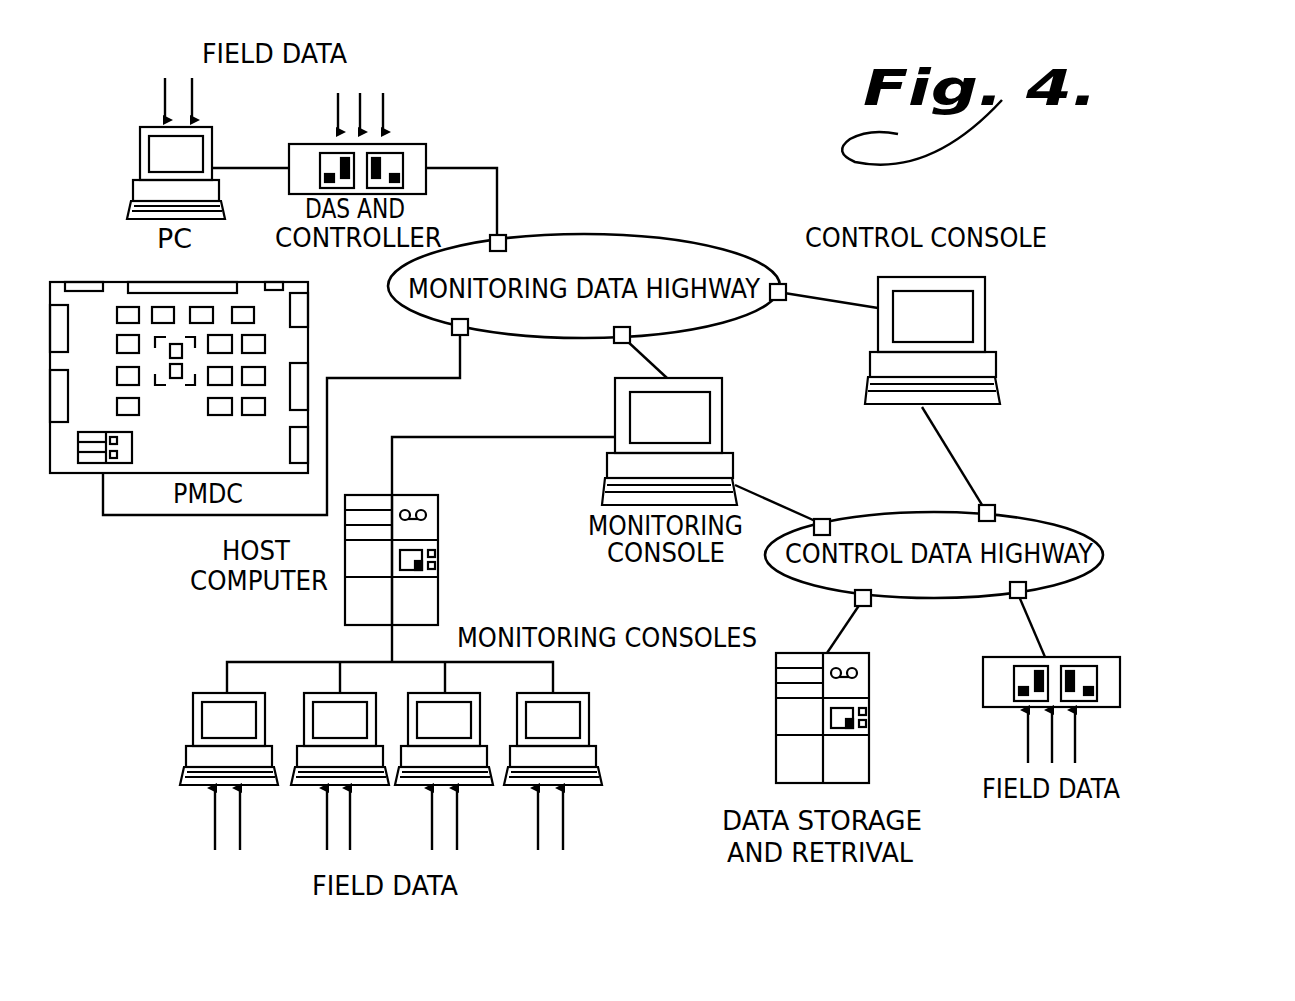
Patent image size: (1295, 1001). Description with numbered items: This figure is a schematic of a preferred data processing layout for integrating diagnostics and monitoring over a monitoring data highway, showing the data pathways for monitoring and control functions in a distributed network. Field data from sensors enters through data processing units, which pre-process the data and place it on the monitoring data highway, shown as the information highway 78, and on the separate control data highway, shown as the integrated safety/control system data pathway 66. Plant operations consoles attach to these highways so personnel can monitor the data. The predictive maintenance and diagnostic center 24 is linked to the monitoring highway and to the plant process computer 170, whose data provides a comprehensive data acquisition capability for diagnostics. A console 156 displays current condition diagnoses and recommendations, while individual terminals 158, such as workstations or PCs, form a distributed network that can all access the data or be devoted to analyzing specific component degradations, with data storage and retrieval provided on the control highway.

The information highway 78 is at (650, 230).
The predictive maintenance and diagnostic center 24 is at (298, 340).
The console 156 is at (705, 412).
The plant process computer 170 is at (430, 530).
The integrated safety/control system data pathway 66 is at (1030, 520).
The individual terminals 158 is at (200, 693).